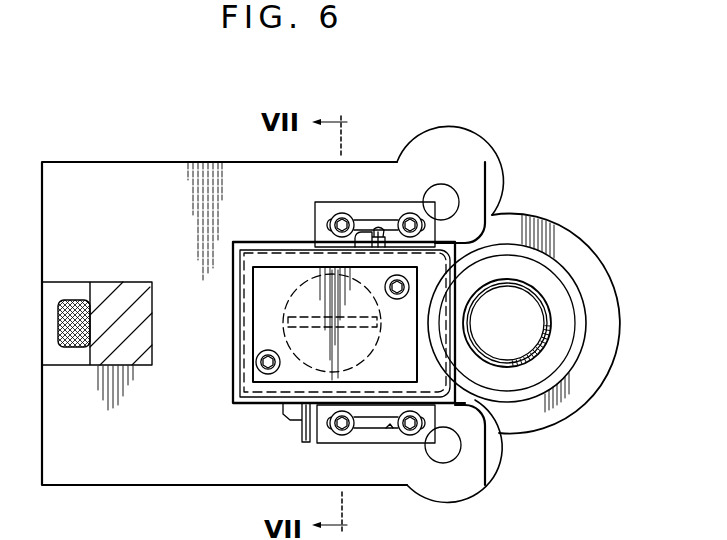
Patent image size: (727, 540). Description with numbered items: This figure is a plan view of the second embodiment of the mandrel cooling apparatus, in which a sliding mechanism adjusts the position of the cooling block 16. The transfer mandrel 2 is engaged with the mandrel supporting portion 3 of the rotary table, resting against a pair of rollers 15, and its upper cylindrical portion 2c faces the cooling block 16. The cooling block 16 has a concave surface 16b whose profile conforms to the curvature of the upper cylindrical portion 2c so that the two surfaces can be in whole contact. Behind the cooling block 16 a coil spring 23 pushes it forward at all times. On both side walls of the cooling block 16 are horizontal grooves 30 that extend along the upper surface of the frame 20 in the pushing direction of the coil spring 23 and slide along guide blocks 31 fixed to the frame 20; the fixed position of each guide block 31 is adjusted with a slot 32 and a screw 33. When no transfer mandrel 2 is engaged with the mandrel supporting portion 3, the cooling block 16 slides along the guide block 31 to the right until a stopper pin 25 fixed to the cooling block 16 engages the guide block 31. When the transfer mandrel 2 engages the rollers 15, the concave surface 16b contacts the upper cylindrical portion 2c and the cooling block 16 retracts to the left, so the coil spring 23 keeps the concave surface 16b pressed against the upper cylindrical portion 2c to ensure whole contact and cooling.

The transfer mandrel 2 is at (622, 317).
The upper cylindrical portion 2c is at (581, 290).
The mandrel supporting portion 3 is at (209, 489).
The rollers 15 is at (457, 495).
The cooling block 16 is at (383, 385).
The concave surface 16b is at (430, 302).
The frame 20 is at (383, 167).
The coil spring 23 is at (232, 347).
The stopper pin 25 is at (302, 436).
The horizontal grooves 30 is at (263, 390).
The guide block 31 is at (445, 452).
The slot 32 is at (390, 428).
The screw 33 is at (337, 431).